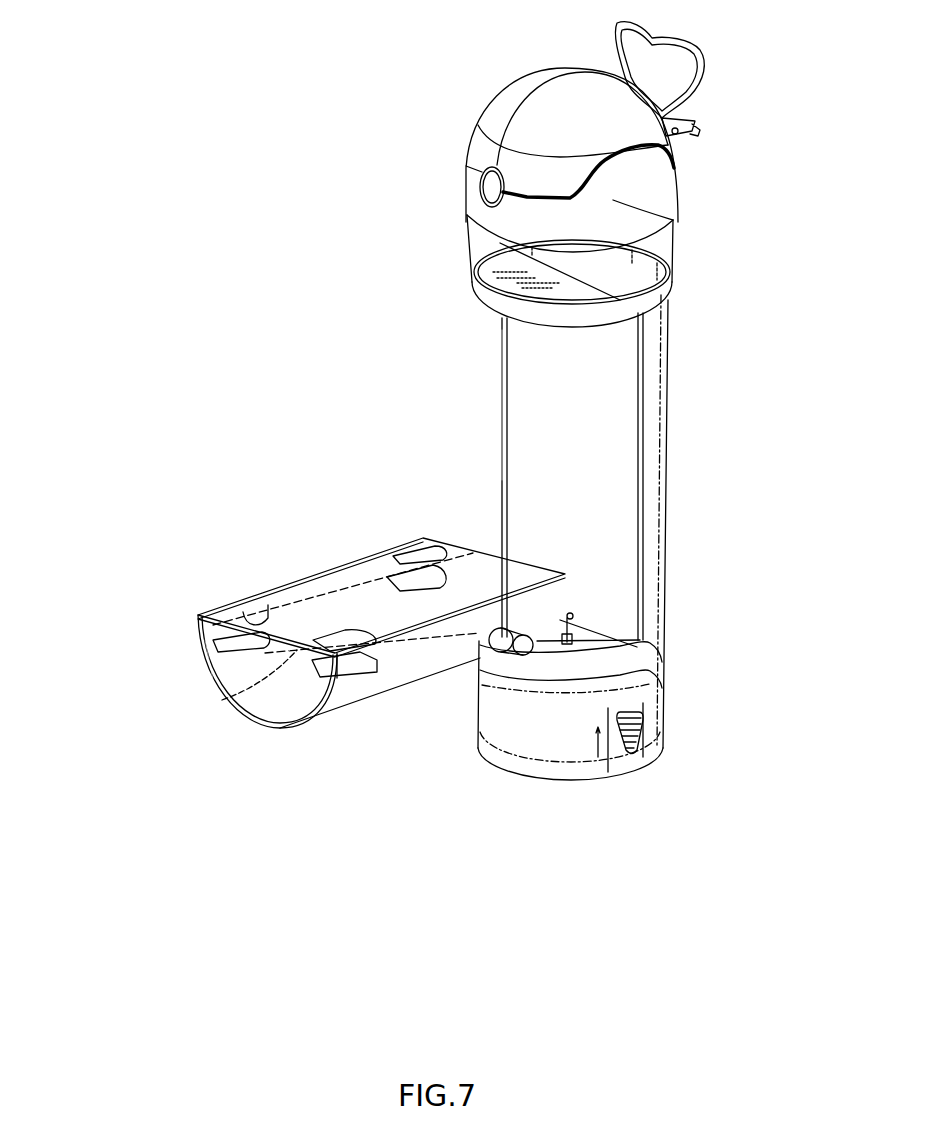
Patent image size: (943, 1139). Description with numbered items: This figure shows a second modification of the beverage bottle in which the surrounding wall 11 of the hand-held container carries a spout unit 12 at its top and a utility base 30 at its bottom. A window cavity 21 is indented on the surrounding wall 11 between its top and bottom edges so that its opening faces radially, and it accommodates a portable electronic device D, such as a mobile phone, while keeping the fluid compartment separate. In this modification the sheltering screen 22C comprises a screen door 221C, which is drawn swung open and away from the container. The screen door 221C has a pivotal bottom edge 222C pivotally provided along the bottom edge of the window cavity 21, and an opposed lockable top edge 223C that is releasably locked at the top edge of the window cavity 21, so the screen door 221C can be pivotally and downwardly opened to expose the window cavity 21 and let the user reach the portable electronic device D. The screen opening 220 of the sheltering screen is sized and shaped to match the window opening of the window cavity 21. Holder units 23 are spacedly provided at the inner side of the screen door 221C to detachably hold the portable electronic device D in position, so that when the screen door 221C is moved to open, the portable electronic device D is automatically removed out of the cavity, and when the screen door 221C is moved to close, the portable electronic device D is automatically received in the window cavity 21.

The spout unit 12 is at (614, 200).
The surrounding wall 11 is at (660, 405).
The window cavity 21 is at (470, 405).
The sheltering screen 22C is at (650, 523).
The holder units 23 is at (270, 605).
The screen opening 220 is at (200, 630).
The portable electronic device D is at (236, 699).
The lockable top edge 223C is at (250, 735).
The screen door 221C is at (372, 683).
The pivotal bottom edge 222C is at (513, 667).
The utility base 30 is at (660, 720).